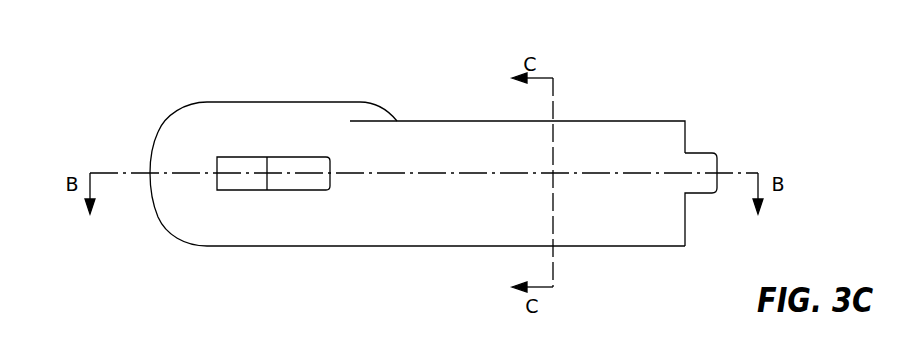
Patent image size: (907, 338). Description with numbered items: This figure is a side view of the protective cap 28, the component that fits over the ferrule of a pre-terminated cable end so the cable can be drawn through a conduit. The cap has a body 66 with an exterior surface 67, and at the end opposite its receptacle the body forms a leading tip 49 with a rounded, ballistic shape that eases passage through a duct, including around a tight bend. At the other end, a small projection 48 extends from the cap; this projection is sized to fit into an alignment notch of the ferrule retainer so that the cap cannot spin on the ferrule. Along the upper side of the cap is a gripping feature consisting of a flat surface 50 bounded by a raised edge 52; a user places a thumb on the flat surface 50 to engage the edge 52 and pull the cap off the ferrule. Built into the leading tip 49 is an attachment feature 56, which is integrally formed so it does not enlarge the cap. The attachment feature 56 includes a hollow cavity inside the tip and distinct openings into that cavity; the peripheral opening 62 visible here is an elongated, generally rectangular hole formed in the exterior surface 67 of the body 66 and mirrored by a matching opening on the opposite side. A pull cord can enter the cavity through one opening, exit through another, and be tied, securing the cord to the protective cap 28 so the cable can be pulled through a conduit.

The protective cap 28 is at (650, 93).
The projection 48 is at (702, 153).
The leading tip 49 is at (160, 128).
The flat surface 50 is at (433, 121).
The raised edge 52 is at (362, 102).
The attachment feature 56 is at (279, 122).
The peripheral opening 62 is at (293, 178).
The body 66 is at (463, 233).
The exterior surface 67 is at (393, 245).